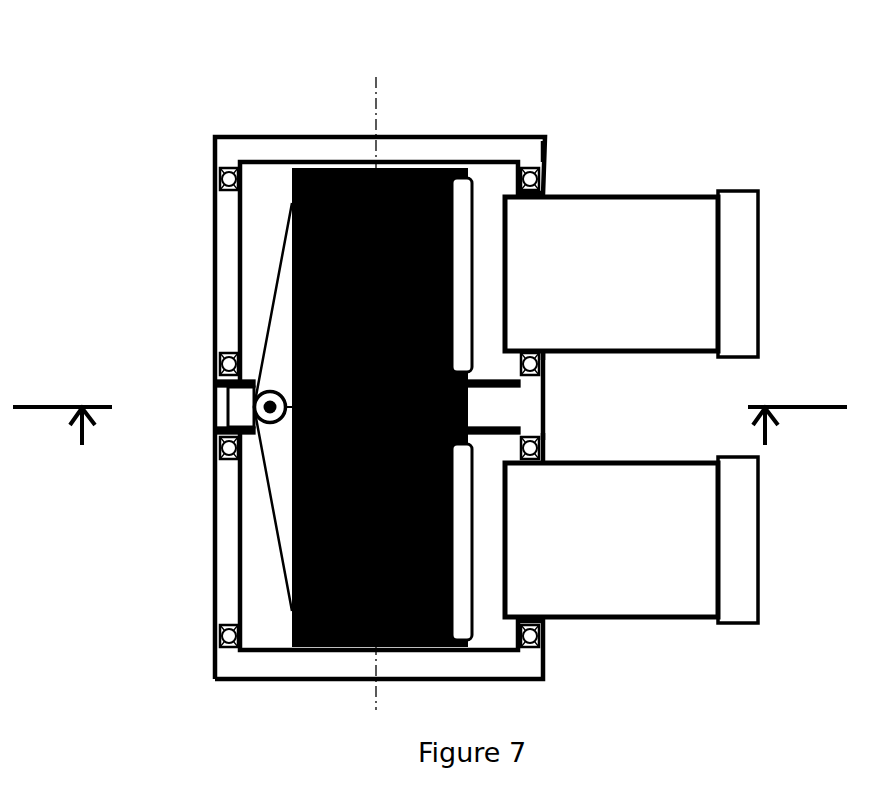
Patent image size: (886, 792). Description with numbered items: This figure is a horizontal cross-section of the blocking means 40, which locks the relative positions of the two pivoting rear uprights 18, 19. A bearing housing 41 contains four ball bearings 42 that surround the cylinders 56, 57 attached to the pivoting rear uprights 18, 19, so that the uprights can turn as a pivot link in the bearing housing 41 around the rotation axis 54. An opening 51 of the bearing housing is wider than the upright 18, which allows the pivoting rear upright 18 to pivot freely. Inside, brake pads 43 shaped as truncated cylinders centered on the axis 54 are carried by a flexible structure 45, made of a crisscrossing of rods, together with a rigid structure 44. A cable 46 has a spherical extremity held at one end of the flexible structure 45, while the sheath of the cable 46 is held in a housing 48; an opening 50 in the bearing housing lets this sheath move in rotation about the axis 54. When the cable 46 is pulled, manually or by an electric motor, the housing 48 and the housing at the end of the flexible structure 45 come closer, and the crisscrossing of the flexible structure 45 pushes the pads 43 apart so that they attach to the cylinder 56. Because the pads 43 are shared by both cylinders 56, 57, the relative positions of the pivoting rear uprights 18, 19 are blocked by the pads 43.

The blocking means 40 is at (262, 89).
The bearing housing 41 is at (222, 248).
The ball bearings 42 is at (217, 180).
The brake pads 43 is at (357, 170).
The rigid structure 44 is at (468, 174).
The flexible structure 45 is at (268, 330).
The cable 46 is at (252, 407).
The housing 48 is at (232, 428).
The opening 50 is at (252, 407).
The opening 51 is at (543, 355).
The rotation axis 54 is at (380, 93).
The cylinder 56 is at (545, 162).
The cylinder 57 is at (543, 437).
The pivoting rear upright 18 is at (652, 208).
The pivoting rear upright 19 is at (683, 602).